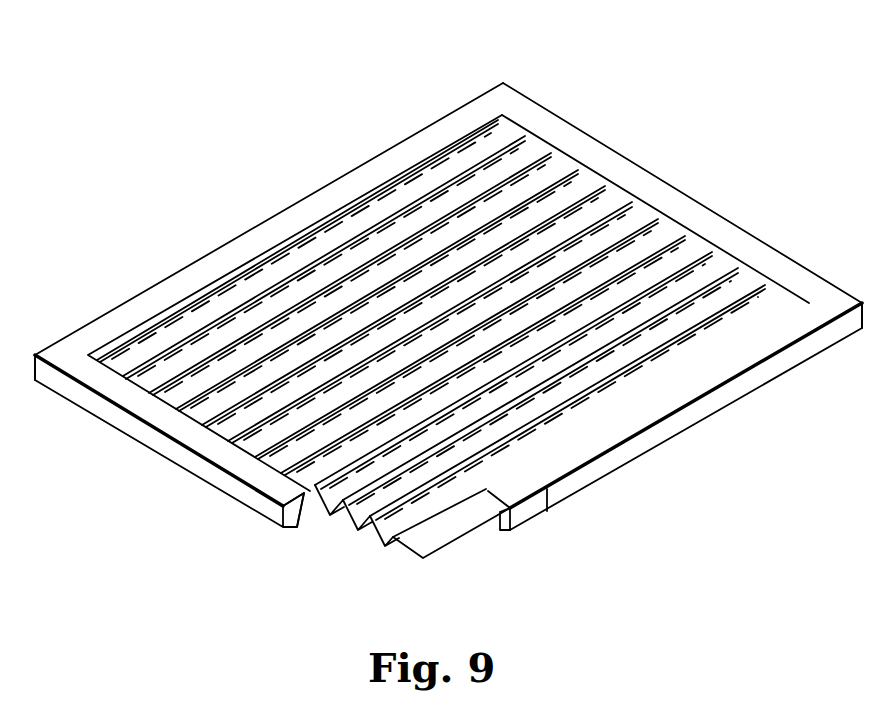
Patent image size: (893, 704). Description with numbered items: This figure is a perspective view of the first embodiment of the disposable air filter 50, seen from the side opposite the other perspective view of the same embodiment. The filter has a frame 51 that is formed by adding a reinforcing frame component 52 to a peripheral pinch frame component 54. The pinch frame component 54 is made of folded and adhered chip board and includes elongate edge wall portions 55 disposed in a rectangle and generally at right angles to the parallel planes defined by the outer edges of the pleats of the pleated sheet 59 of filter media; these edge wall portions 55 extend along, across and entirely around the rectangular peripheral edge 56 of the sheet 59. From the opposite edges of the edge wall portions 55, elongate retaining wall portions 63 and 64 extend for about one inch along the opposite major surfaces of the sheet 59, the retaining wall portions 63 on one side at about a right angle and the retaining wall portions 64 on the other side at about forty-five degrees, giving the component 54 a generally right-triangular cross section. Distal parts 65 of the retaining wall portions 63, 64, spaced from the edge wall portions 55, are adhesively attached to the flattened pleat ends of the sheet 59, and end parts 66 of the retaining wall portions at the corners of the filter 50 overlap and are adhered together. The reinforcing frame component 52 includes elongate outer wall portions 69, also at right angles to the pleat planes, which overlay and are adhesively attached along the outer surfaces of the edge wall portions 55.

The disposable air filter 50 is at (219, 154).
The frame 51 is at (374, 154).
The reinforcing frame component 52 is at (137, 457).
The peripheral pinch frame component 54 is at (302, 193).
The edge wall portions 55 is at (528, 508).
The rectangular peripheral edge 56 is at (378, 530).
The pleated sheet of filter media 59 is at (436, 551).
The retaining wall portions 63 is at (712, 222).
The retaining wall portions 64 is at (290, 530).
The distal parts 65 is at (150, 312).
The end parts 66 is at (497, 90).
The outer wall portions 69 is at (193, 463).